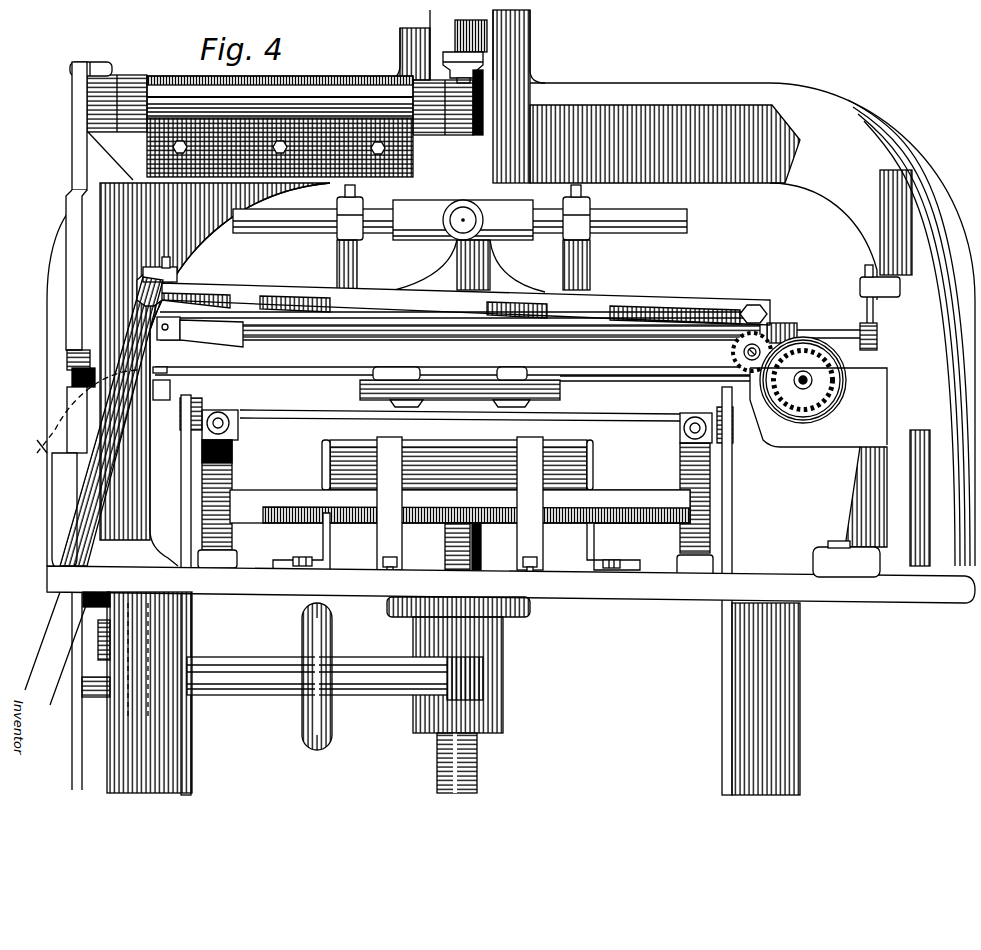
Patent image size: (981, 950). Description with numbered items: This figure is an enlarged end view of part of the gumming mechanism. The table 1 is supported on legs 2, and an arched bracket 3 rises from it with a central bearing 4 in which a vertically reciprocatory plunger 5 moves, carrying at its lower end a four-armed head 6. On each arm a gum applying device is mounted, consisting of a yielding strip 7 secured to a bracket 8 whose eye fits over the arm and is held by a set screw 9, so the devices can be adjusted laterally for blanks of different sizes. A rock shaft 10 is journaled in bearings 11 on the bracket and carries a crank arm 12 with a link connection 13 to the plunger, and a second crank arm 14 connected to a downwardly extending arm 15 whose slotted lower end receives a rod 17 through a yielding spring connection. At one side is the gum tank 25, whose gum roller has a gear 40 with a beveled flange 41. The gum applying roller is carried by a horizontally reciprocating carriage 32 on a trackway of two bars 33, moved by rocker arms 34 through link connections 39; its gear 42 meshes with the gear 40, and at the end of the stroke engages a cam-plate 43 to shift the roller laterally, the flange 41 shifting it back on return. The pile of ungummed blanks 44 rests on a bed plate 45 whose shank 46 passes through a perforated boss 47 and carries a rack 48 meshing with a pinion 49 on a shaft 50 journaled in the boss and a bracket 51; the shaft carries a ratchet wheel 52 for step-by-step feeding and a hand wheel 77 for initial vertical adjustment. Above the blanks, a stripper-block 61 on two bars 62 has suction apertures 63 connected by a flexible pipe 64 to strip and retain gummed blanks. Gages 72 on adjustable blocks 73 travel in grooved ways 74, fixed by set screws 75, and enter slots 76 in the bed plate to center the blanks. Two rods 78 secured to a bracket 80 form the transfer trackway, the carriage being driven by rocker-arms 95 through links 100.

The table 1 is at (622, 588).
The legs 2 is at (165, 752).
The arched bracket 3 is at (511, 324).
The central bearing 4 is at (517, 57).
The vertically reciprocatory plunger 5 is at (483, 93).
The four-armed head 6 is at (282, 212).
The yielding strip 7 is at (609, 298).
The bracket 8 is at (350, 273).
The set screw 9 is at (358, 193).
The rock shaft 10 is at (268, 97).
The bearings 11 is at (137, 86).
The crank arm 12 is at (487, 63).
The link connection 13 is at (455, 33).
The crank arm 14 is at (135, 54).
The downwardly extending arm 15 is at (78, 164).
The rod 17 is at (78, 462).
The gum tank 25 is at (846, 388).
The horizontally reciprocating carriage 32 is at (788, 326).
The bars 33 is at (630, 338).
The rocker arms 34 is at (63, 587).
The link connections 39 is at (460, 306).
The gear 40 is at (838, 383).
The beveled flange 41 is at (845, 393).
The gear 42 is at (732, 361).
The cam-plate 43 is at (222, 341).
The pile of ungummed blanks 44 is at (462, 453).
The bed plate 45 is at (600, 500).
The shank 46 is at (481, 556).
The perforated boss 47 is at (505, 650).
The rack 48 is at (447, 555).
The pinion 49 is at (462, 700).
The shaft 50 is at (375, 692).
The bracket 51 is at (83, 688).
The ratchet wheel 52 is at (150, 712).
The stripper-block 61 is at (548, 390).
The bars 62 is at (610, 384).
The suction apertures 63 is at (413, 406).
The flexible pipe 64 is at (296, 372).
The gages 72 is at (376, 548).
The adjustable blocks 73 is at (388, 585).
The grooved ways 74 is at (400, 580).
The set screws 75 is at (302, 556).
The slots 76 is at (400, 499).
The hand wheel 77 is at (330, 655).
The rods 78 is at (228, 418).
The bracket 80 is at (236, 475).
The rocker-arms 95 is at (186, 484).
The link 100 is at (193, 404).